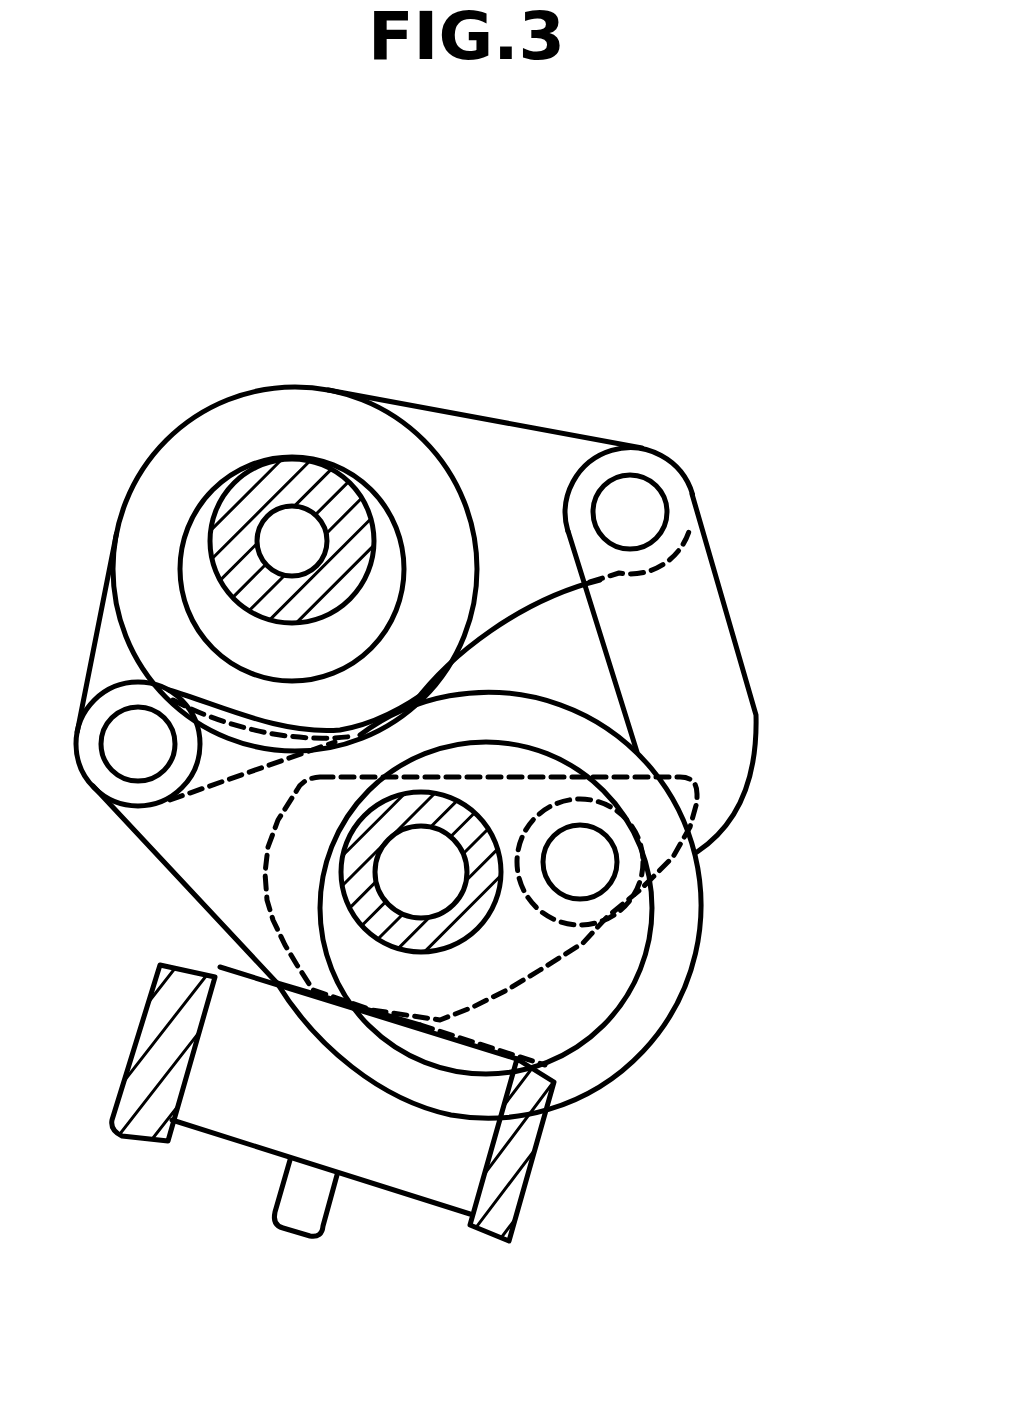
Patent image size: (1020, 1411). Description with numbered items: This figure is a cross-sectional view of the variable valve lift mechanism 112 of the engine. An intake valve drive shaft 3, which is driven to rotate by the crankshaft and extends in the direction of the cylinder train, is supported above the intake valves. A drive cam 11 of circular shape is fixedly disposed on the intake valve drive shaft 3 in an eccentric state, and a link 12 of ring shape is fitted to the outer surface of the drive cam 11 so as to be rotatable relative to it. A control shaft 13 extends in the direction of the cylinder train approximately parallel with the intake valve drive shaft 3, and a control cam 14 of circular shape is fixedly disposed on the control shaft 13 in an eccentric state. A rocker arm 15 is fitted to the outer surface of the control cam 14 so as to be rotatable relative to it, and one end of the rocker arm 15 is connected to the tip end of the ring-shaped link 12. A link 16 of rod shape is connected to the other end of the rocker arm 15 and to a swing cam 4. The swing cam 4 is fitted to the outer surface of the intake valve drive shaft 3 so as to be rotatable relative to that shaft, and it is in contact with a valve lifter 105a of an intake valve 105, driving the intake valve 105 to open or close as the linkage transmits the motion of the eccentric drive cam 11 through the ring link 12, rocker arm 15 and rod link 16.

The variable valve lift mechanism 112 is at (635, 352).
The rocker arm 15 is at (483, 420).
The control cam 14 is at (205, 572).
The control shaft 13 is at (289, 463).
The link of rod shape 16 is at (703, 654).
The link of ring shape 12 is at (143, 842).
The drive cam 11 is at (618, 1008).
The intake valve drive shaft 3 is at (473, 913).
The swing cam 4 is at (511, 990).
The intake valve 105 is at (320, 1223).
The valve lifter 105a is at (437, 1160).